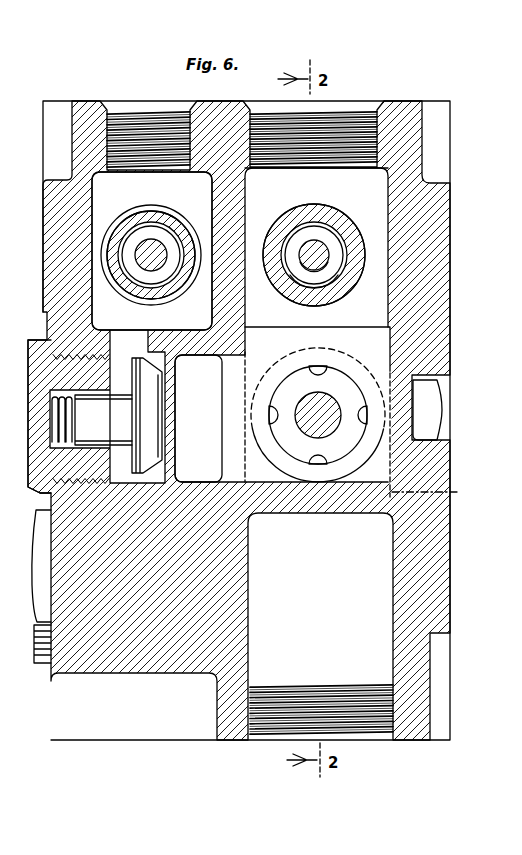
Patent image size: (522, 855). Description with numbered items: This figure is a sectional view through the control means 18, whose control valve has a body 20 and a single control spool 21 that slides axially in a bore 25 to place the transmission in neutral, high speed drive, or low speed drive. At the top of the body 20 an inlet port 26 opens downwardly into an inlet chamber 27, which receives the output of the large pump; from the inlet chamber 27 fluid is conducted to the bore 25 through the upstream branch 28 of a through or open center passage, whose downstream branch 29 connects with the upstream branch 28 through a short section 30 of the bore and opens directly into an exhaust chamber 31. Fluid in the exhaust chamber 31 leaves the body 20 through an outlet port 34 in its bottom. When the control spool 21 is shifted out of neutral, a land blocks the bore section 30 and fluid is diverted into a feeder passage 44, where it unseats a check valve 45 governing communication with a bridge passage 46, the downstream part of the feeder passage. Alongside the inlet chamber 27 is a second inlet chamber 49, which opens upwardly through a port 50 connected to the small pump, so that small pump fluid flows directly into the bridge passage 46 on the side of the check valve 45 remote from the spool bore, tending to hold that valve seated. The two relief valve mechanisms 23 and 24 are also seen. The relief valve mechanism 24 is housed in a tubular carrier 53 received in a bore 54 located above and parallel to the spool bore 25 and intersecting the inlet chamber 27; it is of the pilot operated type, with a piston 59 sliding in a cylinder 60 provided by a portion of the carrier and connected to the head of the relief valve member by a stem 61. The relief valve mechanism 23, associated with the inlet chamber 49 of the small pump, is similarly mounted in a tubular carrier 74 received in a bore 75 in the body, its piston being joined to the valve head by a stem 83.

The control means 18 is at (64, 72).
The body 20 is at (452, 256).
The control spool 21 is at (258, 408).
The relief valve mechanism 23 is at (151, 199).
The relief valve mechanism 24 is at (292, 200).
The bore 25 is at (272, 439).
The inlet port 26 is at (352, 123).
The inlet chamber 27 is at (320, 193).
The upstream branch 28 is at (362, 348).
The downstream branch 29 is at (436, 490).
The short section of the bore 30 is at (352, 445).
The exhaust chamber 31 is at (323, 602).
The outlet port 34 is at (260, 720).
The feeder passage 44 is at (232, 388).
The check valve 45 is at (150, 414).
The bridge passage 46 is at (123, 463).
The inlet chamber 49 is at (123, 196).
The port 50 is at (147, 122).
The tubular carrier 53 is at (341, 210).
The bore 54 is at (346, 225).
The piston 59 is at (328, 277).
The cylinder 60 is at (302, 277).
The stem 61 is at (302, 248).
The tubular carrier 74 is at (127, 298).
The bore 75 is at (169, 220).
The stem 83 is at (166, 250).